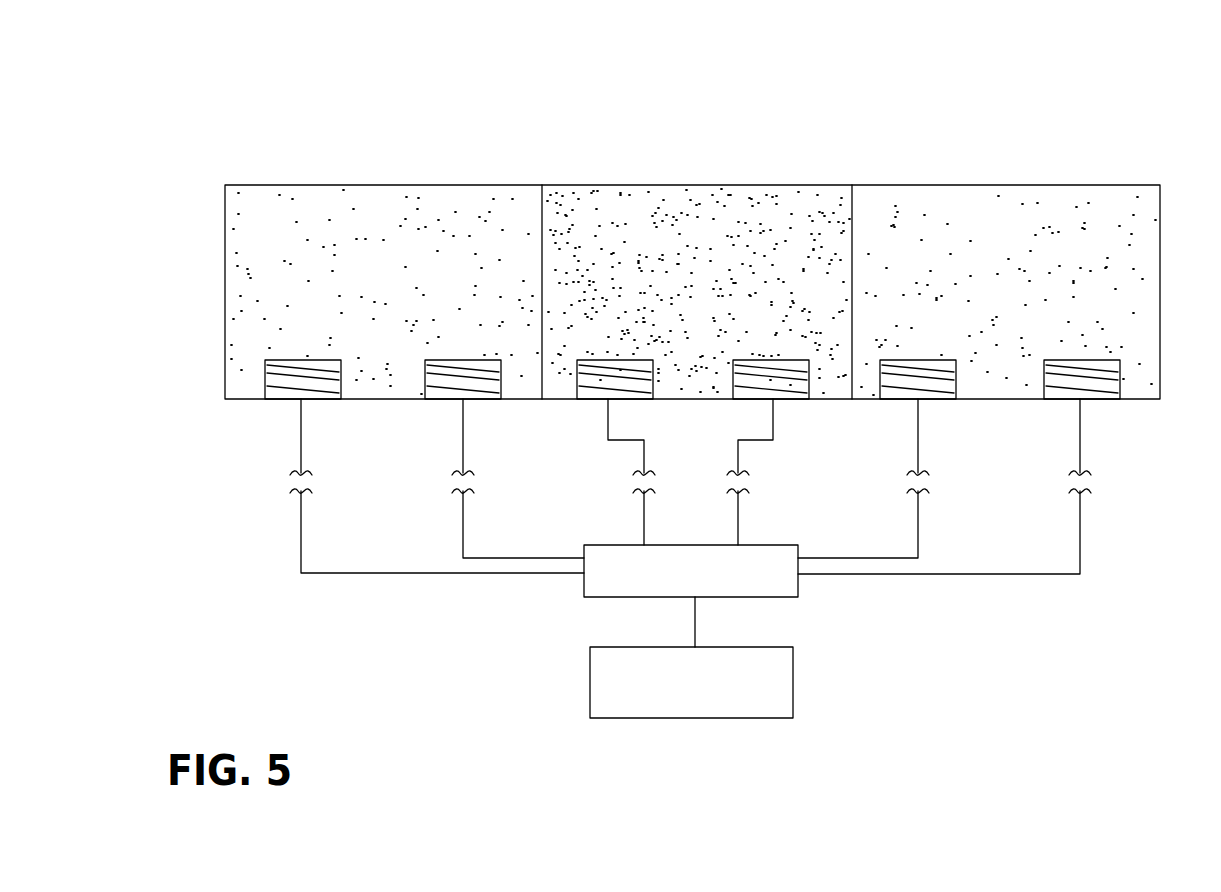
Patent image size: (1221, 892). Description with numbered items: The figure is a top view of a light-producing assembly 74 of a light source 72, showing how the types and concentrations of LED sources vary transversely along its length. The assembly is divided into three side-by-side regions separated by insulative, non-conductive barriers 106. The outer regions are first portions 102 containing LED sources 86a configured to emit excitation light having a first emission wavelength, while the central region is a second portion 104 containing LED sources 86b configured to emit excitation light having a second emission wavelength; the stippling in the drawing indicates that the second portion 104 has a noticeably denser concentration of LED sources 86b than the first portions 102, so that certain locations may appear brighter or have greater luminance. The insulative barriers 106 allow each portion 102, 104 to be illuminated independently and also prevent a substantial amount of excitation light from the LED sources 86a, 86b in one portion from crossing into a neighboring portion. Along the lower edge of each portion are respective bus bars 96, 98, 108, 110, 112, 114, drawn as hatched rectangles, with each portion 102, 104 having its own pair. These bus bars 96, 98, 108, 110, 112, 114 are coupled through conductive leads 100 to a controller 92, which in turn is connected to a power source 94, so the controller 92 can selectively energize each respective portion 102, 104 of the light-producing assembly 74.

The light source 72 is at (1124, 120).
The light-producing assembly 74 is at (240, 183).
The LED sources 86a is at (417, 218).
The LED sources 86b is at (713, 205).
The controller 92 is at (798, 588).
The power source 94 is at (793, 667).
The bus bar 96 is at (282, 390).
The bus bar 98 is at (443, 388).
The conductive leads 100 is at (738, 533).
The first portion 102 is at (303, 222).
The second portion 104 is at (652, 195).
The insulative barriers 106 is at (545, 197).
The bus bar 108 is at (593, 390).
The bus bar 110 is at (793, 385).
The bus bar 112 is at (937, 380).
The bus bar 114 is at (1103, 380).